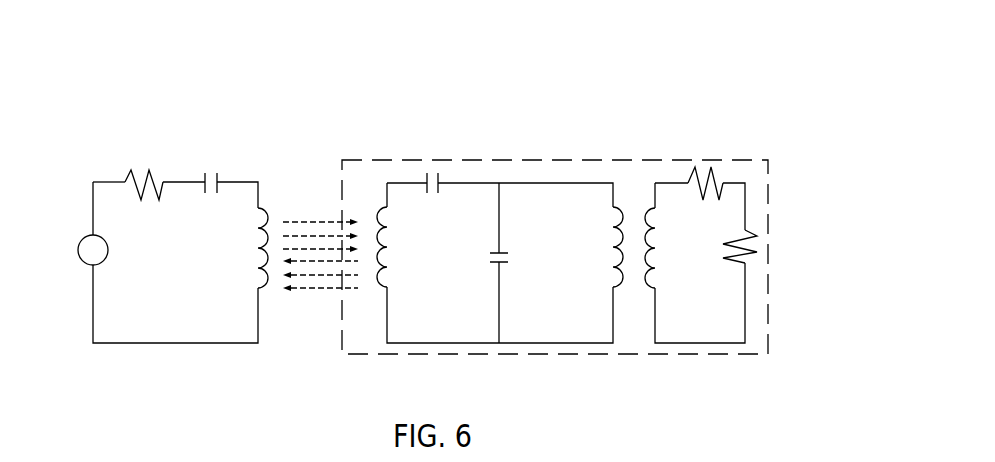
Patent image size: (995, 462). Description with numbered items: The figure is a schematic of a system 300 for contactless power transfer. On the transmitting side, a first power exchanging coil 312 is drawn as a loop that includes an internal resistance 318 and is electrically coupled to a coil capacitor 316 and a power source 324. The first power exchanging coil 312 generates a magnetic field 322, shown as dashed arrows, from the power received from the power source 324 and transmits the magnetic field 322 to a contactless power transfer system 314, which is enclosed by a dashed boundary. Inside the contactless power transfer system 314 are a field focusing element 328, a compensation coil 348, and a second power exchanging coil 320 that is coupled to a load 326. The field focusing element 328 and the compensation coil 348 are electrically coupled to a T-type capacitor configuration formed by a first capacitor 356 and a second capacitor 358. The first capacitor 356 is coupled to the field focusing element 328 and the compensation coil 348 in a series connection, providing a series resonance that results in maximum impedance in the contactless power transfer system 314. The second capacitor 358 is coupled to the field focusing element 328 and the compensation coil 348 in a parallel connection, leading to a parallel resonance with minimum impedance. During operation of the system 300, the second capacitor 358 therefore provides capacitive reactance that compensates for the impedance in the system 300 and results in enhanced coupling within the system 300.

The system 300 is at (653, 63).
The first power exchanging coil 312 is at (108, 181).
The internal resistance 318 is at (165, 153).
The coil capacitor 316 is at (217, 178).
The power source 324 is at (108, 250).
The magnetic field 322 is at (292, 222).
The contactless power transfer system 314 is at (520, 158).
The first capacitor 356 is at (437, 178).
The second capacitor 358 is at (498, 252).
The field focusing element 328 is at (388, 252).
The compensation coil 348 is at (617, 242).
The second power exchanging coil 320 is at (668, 180).
The load 326 is at (735, 262).